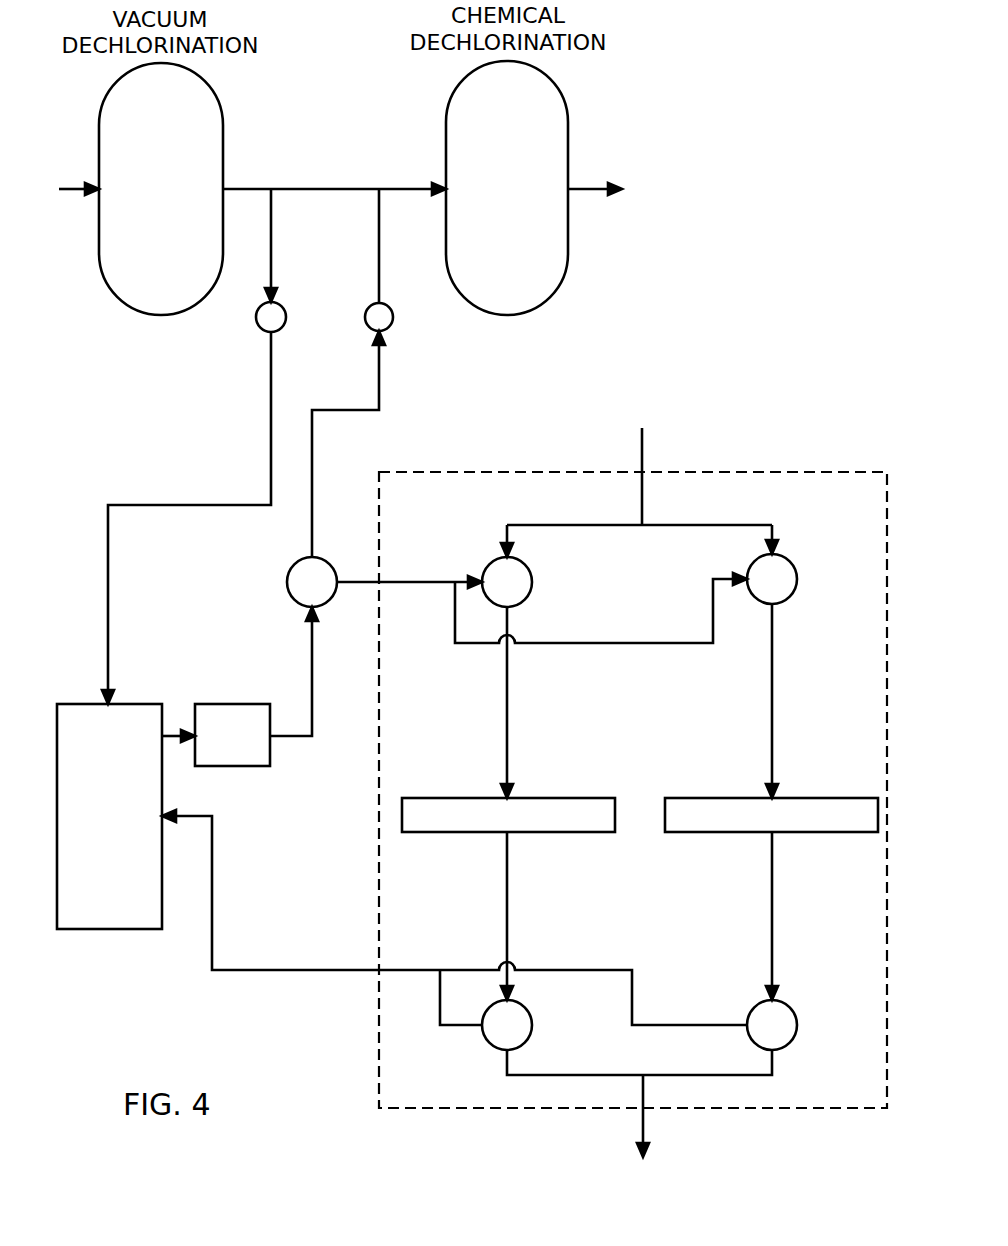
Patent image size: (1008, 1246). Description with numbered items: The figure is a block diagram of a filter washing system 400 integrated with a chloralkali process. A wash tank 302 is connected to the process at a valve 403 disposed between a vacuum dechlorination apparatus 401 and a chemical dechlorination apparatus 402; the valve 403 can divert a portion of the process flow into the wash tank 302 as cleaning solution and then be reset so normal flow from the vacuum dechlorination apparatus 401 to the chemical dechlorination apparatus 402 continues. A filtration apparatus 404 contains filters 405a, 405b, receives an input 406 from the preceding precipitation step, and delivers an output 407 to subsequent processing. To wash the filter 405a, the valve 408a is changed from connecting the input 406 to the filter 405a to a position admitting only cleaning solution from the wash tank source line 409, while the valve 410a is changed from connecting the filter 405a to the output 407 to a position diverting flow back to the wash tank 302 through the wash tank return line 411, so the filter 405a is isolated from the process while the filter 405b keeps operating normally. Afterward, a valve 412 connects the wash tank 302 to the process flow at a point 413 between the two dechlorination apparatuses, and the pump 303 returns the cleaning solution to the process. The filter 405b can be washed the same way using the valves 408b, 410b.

The filter washing system 400 is at (110, 480).
The vacuum dechlorination apparatus 401 is at (161, 189).
The chemical dechlorination apparatus 402 is at (507, 188).
The valve 403 is at (257, 319).
The filtration apparatus 404 is at (633, 790).
The filter 405a is at (593, 798).
The filter 405b is at (812, 798).
The input 406 is at (639, 476).
The output 407 is at (639, 1104).
The valve 408a is at (532, 582).
The valve 408b is at (797, 579).
The wash tank source line 409 is at (352, 578).
The valve 410a is at (490, 1043).
The valve 410b is at (797, 1025).
The wash tank return line 411 is at (454, 917).
The valve 412 is at (286, 584).
The point 413 is at (393, 322).
The wash tank 302 is at (109, 816).
The pump 303 is at (240, 686).